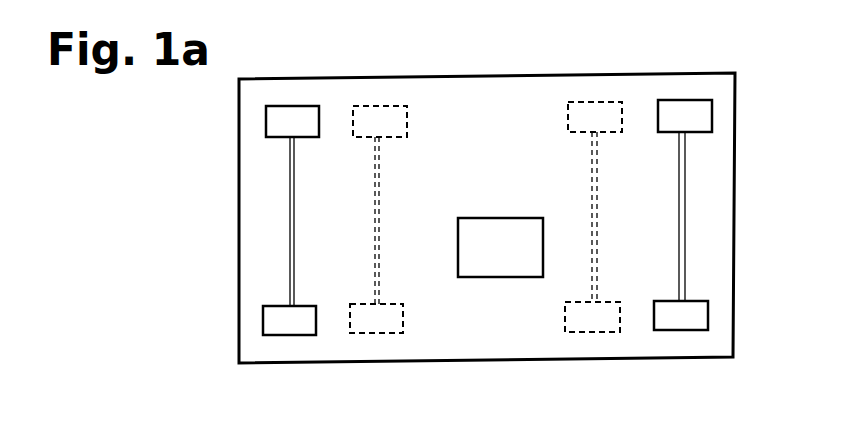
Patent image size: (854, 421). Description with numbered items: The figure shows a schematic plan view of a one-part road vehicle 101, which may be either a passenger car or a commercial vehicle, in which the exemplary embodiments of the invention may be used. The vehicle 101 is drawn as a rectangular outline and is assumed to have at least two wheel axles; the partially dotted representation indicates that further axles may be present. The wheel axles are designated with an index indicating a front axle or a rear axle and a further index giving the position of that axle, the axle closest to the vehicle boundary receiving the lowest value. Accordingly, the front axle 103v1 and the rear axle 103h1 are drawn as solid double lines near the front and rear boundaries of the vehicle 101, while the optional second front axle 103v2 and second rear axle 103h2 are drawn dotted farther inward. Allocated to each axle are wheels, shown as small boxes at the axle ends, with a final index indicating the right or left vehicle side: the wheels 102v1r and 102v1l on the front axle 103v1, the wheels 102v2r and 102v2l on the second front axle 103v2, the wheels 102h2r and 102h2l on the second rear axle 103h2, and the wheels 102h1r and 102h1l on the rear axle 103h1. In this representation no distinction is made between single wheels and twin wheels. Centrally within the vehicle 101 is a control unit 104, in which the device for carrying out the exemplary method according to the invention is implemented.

The vehicle 101 is at (733, 258).
The wheel 102v1r is at (290, 117).
The wheel 102v2r is at (378, 115).
The wheel 102h2r is at (597, 112).
The wheel 102h1r is at (685, 110).
The wheel 102v1l is at (288, 330).
The wheel 102v2l is at (373, 330).
The wheel 102h2l is at (595, 327).
The wheel 102h1l is at (683, 323).
The wheel axle 103v1 is at (320, 200).
The wheel axle 103v2 is at (408, 199).
The wheel axle 103h2 is at (594, 205).
The wheel axle 103h1 is at (681, 199).
The control unit 104 is at (482, 268).